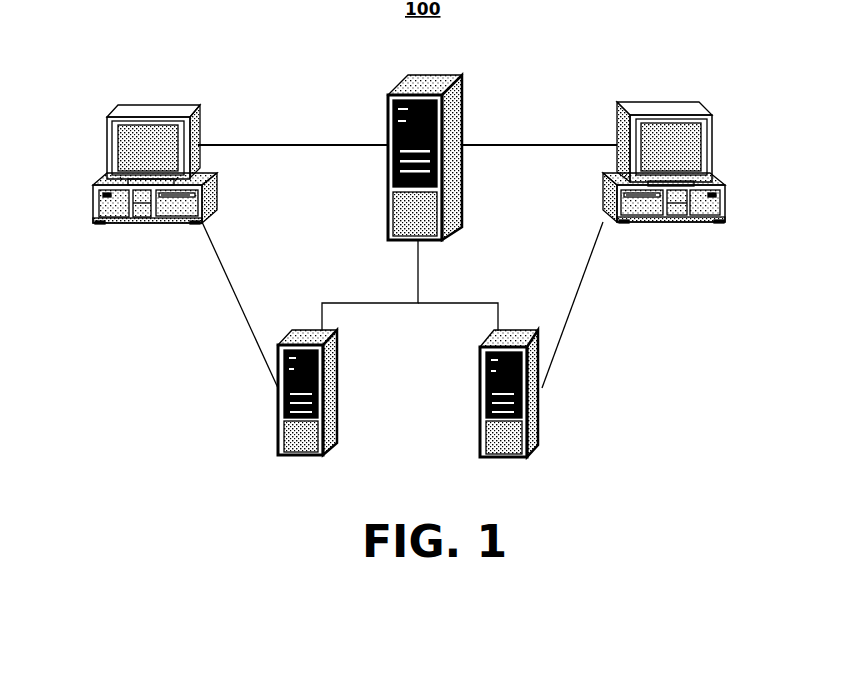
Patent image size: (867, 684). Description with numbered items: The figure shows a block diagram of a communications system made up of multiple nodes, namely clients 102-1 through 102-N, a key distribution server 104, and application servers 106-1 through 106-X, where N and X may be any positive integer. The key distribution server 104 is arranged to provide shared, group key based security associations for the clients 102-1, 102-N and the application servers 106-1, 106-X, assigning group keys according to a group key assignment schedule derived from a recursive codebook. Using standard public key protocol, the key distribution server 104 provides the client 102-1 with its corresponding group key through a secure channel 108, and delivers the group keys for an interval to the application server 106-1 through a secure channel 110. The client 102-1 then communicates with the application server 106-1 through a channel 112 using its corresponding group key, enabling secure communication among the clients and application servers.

The client 102-1 is at (107, 145).
The client 102-N is at (712, 145).
The key distribution server 104 is at (388, 197).
The application server 106-1 is at (278, 423).
The application server 106-X is at (542, 423).
The secure channel 108 is at (270, 145).
The secure channel 110 is at (350, 303).
The channel 112 is at (227, 283).